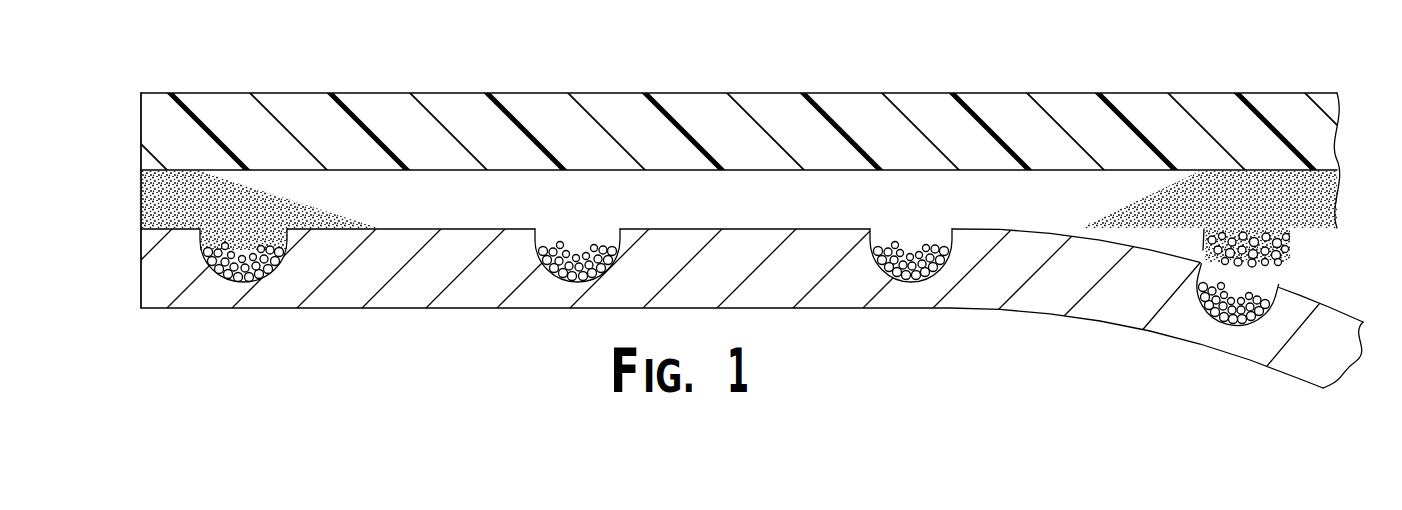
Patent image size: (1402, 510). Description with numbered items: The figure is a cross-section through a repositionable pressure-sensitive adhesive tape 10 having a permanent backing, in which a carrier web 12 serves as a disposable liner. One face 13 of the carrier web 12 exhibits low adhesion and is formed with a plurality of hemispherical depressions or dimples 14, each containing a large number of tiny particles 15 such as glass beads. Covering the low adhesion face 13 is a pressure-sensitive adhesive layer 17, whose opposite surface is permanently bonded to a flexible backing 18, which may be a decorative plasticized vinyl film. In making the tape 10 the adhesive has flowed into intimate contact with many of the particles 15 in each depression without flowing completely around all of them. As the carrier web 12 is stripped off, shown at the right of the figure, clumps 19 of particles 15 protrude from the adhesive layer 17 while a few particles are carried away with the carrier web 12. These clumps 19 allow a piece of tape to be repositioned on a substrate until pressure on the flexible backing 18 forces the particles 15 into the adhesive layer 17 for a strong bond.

The repositionable pressure-sensitive adhesive tape 10 is at (240, 84).
The carrier web 12 is at (1282, 358).
The low adhesion face 13 is at (1318, 295).
The hemispherical depressions or dimples 14 is at (268, 270).
The particles 15 is at (246, 282).
The pressure-sensitive adhesive layer 17 is at (1333, 190).
The flexible backing 18 is at (1217, 107).
The clumps 19 is at (1291, 248).